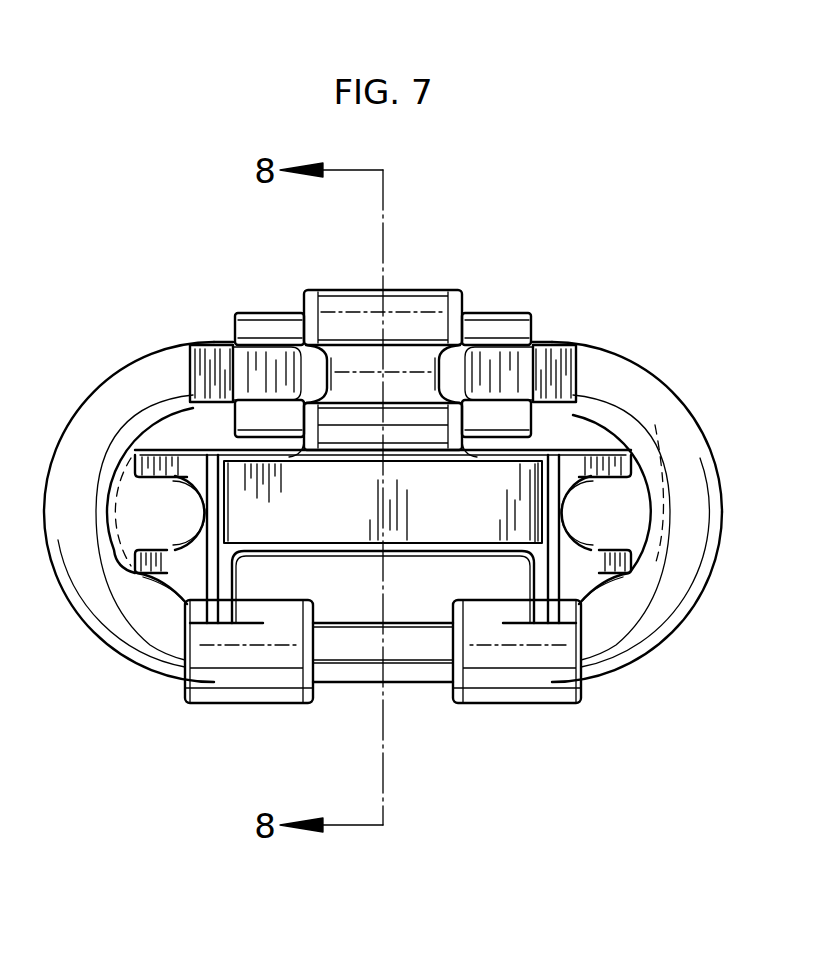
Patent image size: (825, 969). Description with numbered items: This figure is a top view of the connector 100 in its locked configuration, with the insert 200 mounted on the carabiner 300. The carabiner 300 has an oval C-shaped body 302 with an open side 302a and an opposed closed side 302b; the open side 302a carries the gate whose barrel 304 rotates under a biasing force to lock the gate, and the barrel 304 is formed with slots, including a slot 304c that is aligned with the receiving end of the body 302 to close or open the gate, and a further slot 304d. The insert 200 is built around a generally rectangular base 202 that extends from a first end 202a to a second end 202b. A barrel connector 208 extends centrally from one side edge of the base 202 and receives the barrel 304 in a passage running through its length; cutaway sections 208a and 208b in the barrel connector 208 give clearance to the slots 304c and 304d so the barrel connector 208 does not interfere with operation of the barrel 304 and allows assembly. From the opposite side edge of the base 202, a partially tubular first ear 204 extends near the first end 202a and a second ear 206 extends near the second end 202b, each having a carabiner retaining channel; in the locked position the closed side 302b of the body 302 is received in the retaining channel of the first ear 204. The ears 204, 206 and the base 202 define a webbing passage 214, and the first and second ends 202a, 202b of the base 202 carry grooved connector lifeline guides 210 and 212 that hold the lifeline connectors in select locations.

The connector 100 is at (624, 246).
The insert 200 is at (423, 407).
The base 202 is at (428, 513).
The first end of the base 202a is at (158, 570).
The second end of the base 202b is at (622, 461).
The first ear 204 is at (267, 687).
The second ear 206 is at (555, 673).
The barrel connector 208 is at (405, 300).
The cutaway section 208a is at (308, 360).
The cutaway section 208b is at (460, 293).
The first connector lifeline guide 210 is at (133, 527).
The second connector lifeline guide 212 is at (584, 527).
The webbing passage 214 is at (392, 594).
The carabiner 300 is at (693, 391).
The body 302 is at (703, 524).
The open side 302a is at (585, 360).
The closed side 302b is at (422, 668).
The barrel 304 is at (475, 318).
The slot 304c is at (528, 378).
The slot 304d is at (253, 370).